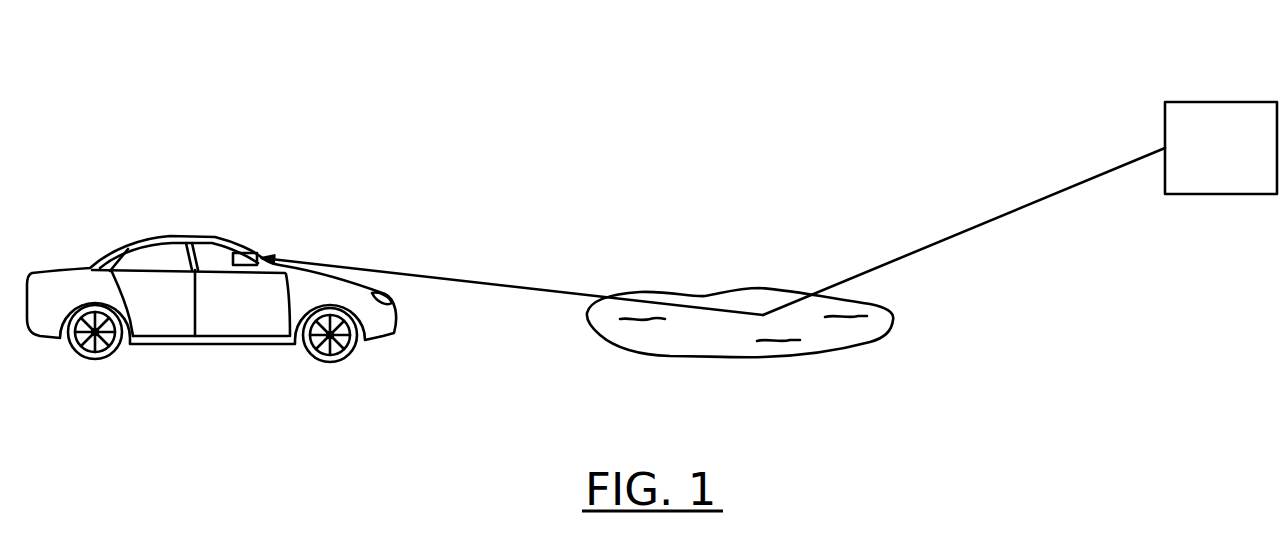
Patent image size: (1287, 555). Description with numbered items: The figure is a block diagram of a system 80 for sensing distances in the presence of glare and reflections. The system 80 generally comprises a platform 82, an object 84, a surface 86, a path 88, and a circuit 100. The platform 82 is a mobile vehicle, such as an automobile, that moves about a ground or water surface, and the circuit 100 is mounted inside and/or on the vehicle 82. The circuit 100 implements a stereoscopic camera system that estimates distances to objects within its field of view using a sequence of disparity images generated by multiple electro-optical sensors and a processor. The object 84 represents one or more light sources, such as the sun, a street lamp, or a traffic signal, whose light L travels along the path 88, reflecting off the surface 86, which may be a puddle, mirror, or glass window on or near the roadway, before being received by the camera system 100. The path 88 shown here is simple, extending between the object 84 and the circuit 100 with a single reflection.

The system 80 is at (578, 40).
The platform 82 is at (161, 237).
The object 84 is at (1205, 101).
The surface 86 is at (662, 356).
The path 88 is at (500, 282).
The circuit 100 is at (238, 252).